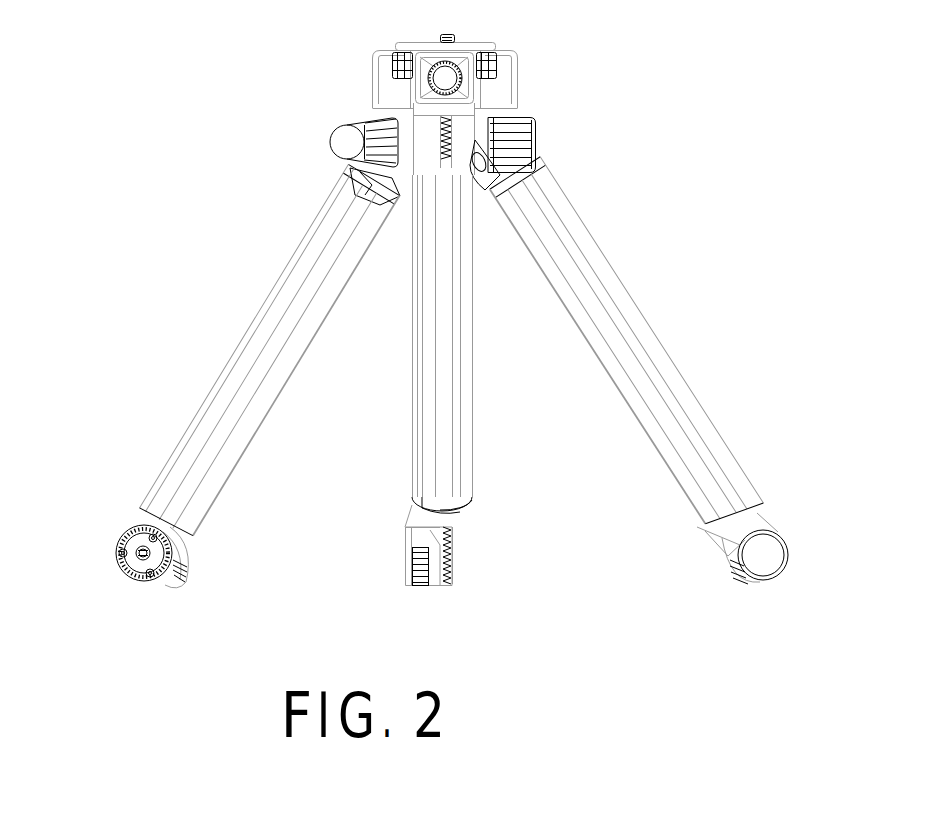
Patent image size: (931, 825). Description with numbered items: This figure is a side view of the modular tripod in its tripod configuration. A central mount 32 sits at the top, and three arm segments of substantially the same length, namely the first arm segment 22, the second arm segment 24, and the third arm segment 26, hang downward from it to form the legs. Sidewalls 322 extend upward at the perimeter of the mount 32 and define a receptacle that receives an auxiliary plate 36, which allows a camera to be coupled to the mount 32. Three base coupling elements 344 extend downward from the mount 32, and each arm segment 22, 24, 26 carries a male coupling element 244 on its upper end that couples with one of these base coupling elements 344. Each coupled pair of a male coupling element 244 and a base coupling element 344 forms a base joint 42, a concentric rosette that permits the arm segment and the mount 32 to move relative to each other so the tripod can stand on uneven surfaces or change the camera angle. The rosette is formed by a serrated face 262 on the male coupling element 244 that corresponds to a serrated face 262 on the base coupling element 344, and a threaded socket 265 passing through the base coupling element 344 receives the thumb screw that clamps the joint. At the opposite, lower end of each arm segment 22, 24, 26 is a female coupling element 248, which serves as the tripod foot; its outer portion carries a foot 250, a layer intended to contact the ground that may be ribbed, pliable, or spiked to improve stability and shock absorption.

The first arm segment 22 is at (435, 423).
The second arm segment 24 is at (657, 412).
The third arm segment 26 is at (205, 395).
The mount 32 is at (372, 52).
The plate 36 is at (460, 47).
The base joint 42 is at (413, 112).
The male coupling element 244 is at (345, 142).
The female coupling element 248 is at (188, 572).
The foot 250 is at (180, 580).
The serrated face 262 is at (120, 547).
The threaded socket 265 is at (125, 570).
The sidewalls 322 is at (512, 70).
The base coupling element 344 is at (388, 198).